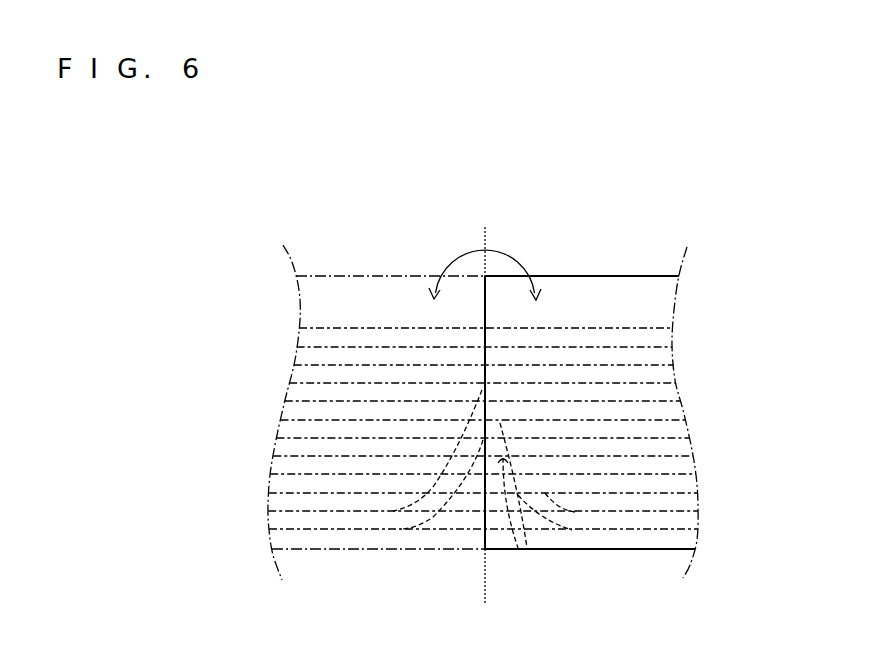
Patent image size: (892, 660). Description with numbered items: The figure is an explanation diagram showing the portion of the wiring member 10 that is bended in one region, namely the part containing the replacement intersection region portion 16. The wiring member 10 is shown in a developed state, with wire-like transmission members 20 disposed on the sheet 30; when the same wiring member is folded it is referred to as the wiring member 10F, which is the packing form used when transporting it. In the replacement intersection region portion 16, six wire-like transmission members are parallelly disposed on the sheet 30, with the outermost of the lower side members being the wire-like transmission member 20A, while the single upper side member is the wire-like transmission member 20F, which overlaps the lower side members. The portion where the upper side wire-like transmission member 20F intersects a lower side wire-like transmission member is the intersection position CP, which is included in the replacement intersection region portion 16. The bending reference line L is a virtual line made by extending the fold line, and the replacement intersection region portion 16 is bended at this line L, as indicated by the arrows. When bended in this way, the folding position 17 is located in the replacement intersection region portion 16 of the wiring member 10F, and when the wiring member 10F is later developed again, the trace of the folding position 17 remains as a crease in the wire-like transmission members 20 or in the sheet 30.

The wiring member 10 is at (412, 208).
The wiring member in folded state 10F is at (667, 208).
The sheet 30 is at (325, 288).
The wire-like transmission member 20 is at (390, 333).
The wire-like transmission member 20A is at (270, 482).
The wire-like transmission member 20F is at (330, 523).
The replacement intersection region portion 16 is at (460, 500).
The folding position 17 is at (484, 527).
The intersection position CP is at (527, 548).
The bending reference line L is at (487, 238).